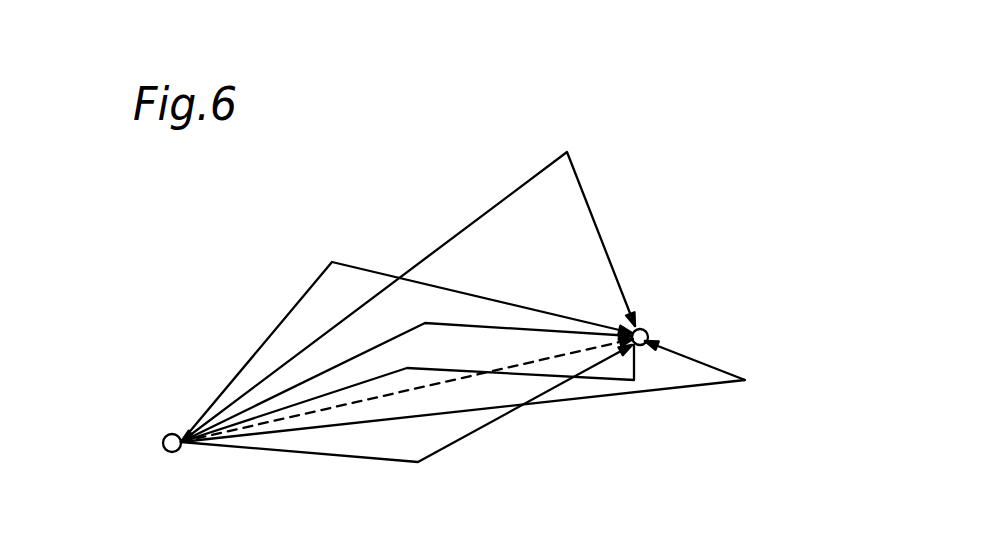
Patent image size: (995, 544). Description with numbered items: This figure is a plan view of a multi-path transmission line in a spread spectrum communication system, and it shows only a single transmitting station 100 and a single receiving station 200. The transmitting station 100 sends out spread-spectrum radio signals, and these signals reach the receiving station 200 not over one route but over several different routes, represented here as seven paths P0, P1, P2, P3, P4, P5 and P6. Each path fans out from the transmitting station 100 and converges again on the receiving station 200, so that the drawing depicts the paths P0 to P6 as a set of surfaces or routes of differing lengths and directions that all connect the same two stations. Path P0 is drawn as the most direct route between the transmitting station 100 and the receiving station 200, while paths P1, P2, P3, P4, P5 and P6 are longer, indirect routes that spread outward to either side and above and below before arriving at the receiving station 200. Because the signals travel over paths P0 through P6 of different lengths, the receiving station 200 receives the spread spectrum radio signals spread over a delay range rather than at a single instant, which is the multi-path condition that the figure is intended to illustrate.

The transmitting station 100 is at (327, 490).
The receiving station 200 is at (912, 321).
The path P0 is at (458, 378).
The path P1 is at (601, 378).
The path P2 is at (393, 338).
The path P3 is at (486, 425).
The path P4 is at (693, 390).
The path P5 is at (355, 262).
The path P6 is at (608, 247).